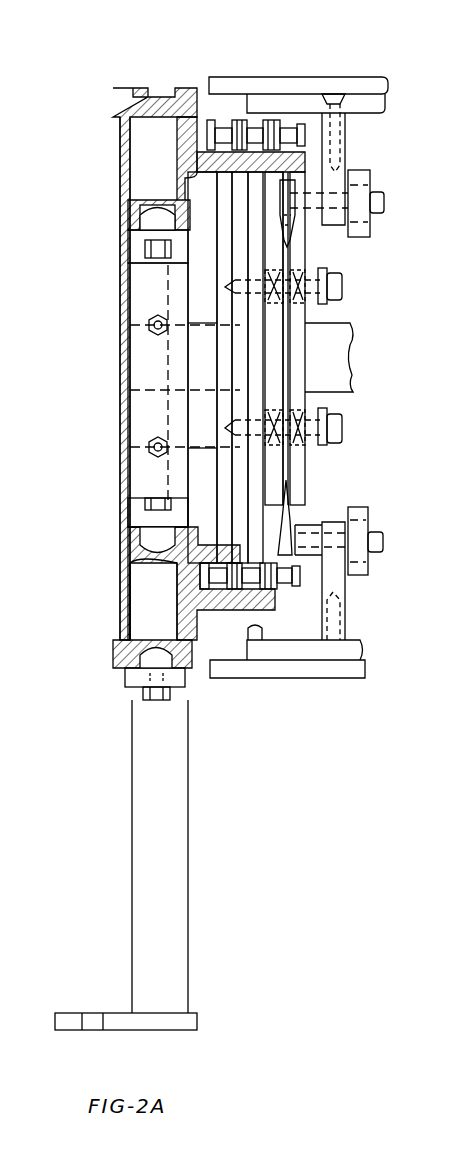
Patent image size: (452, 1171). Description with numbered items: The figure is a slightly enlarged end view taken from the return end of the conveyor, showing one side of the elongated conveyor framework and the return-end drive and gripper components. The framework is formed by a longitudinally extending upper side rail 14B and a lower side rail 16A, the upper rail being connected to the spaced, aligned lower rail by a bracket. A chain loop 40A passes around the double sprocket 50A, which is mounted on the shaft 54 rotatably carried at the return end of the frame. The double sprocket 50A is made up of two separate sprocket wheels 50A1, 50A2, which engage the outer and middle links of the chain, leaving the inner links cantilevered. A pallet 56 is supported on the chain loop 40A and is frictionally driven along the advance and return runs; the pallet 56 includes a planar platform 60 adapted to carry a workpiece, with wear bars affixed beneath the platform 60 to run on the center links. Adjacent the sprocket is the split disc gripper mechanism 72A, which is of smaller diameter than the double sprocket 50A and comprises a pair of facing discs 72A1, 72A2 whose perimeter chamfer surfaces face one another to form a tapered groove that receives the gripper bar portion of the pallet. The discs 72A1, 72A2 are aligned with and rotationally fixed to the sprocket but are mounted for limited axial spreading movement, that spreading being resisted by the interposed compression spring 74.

The upper side rail 14B is at (116, 92).
The chain loop 40A is at (214, 118).
The planar platform 60 is at (283, 106).
The pallet 56 is at (336, 77).
The split disc gripper mechanism 72A is at (262, 246).
The compression spring 74 is at (272, 268).
The shaft 54 is at (336, 323).
The double sprocket 50A is at (214, 352).
The sprocket wheel 50A1 is at (226, 380).
The sprocket wheel 50A2 is at (246, 470).
The disc 72A1 is at (295, 455).
The disc 72A2 is at (274, 478).
The lower side rail 16A is at (114, 670).